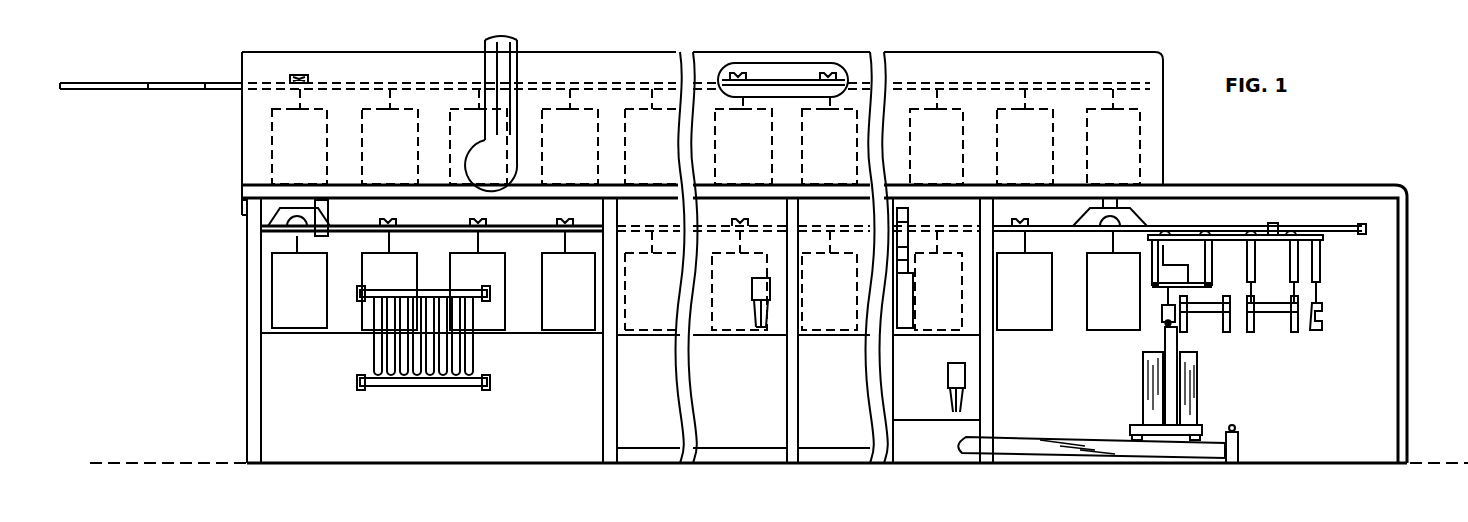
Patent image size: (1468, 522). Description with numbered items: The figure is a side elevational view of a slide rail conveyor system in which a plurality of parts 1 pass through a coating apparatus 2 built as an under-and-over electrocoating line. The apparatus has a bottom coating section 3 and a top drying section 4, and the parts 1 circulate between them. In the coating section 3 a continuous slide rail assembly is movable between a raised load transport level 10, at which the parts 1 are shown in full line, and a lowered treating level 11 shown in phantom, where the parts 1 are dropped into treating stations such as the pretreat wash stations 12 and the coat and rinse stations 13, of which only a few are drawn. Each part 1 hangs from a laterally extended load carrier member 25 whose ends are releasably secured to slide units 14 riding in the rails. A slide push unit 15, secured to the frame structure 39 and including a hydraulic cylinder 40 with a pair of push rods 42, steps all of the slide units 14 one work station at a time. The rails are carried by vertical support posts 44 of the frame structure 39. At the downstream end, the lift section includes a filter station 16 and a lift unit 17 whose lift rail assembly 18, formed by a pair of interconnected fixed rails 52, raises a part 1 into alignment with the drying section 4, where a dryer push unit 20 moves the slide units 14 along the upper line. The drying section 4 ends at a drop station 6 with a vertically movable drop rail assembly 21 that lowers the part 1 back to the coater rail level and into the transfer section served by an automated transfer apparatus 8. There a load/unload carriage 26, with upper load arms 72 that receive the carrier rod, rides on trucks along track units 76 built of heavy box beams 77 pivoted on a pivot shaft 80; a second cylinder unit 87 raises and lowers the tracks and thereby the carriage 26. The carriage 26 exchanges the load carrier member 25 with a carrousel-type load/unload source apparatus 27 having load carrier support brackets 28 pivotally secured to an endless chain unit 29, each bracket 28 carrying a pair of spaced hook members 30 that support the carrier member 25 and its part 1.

The parts 1 is at (272, 140).
The coating apparatus 2 is at (1242, 133).
The coating section 3 is at (216, 308).
The drying section 4 is at (192, 143).
The drop station 6 is at (1122, 144).
The automated transfer apparatus 8 is at (1290, 442).
The raised load transport level 10 is at (990, 148).
The treating or coating level 11 is at (1078, 299).
The pretreat wash stations 12 is at (917, 344).
The coat and rinse stations 13 is at (745, 344).
The slide unit 14 is at (477, 217).
The slide push unit 15 is at (1291, 225).
The filter station 16 is at (531, 424).
The lift unit 17 is at (320, 422).
The lift rail assembly 18 is at (302, 240).
The dryer push unit 20 is at (213, 52).
The drop rail assembly 21 is at (1097, 54).
The load carrier member 25 is at (828, 88).
The load/unload carriage 26 is at (1156, 382).
The load/unload source apparatus 27 is at (1354, 394).
The load carrier support brackets 28 is at (1321, 304).
The endless chain unit 29 is at (1322, 276).
The hook members 30 is at (1323, 328).
The frame structure 39 is at (1400, 186).
The hydraulic cylinder 40 is at (1328, 225).
The push rods 42 is at (1190, 230).
The vertical support posts 44 is at (990, 396).
The fixed rails 52 is at (331, 236).
The upper load arms 72 is at (1178, 349).
The track units 76 is at (1072, 456).
The box beam 77 is at (1158, 446).
The pivot shaft 80 is at (975, 437).
The second cylinder unit 87 is at (1246, 456).